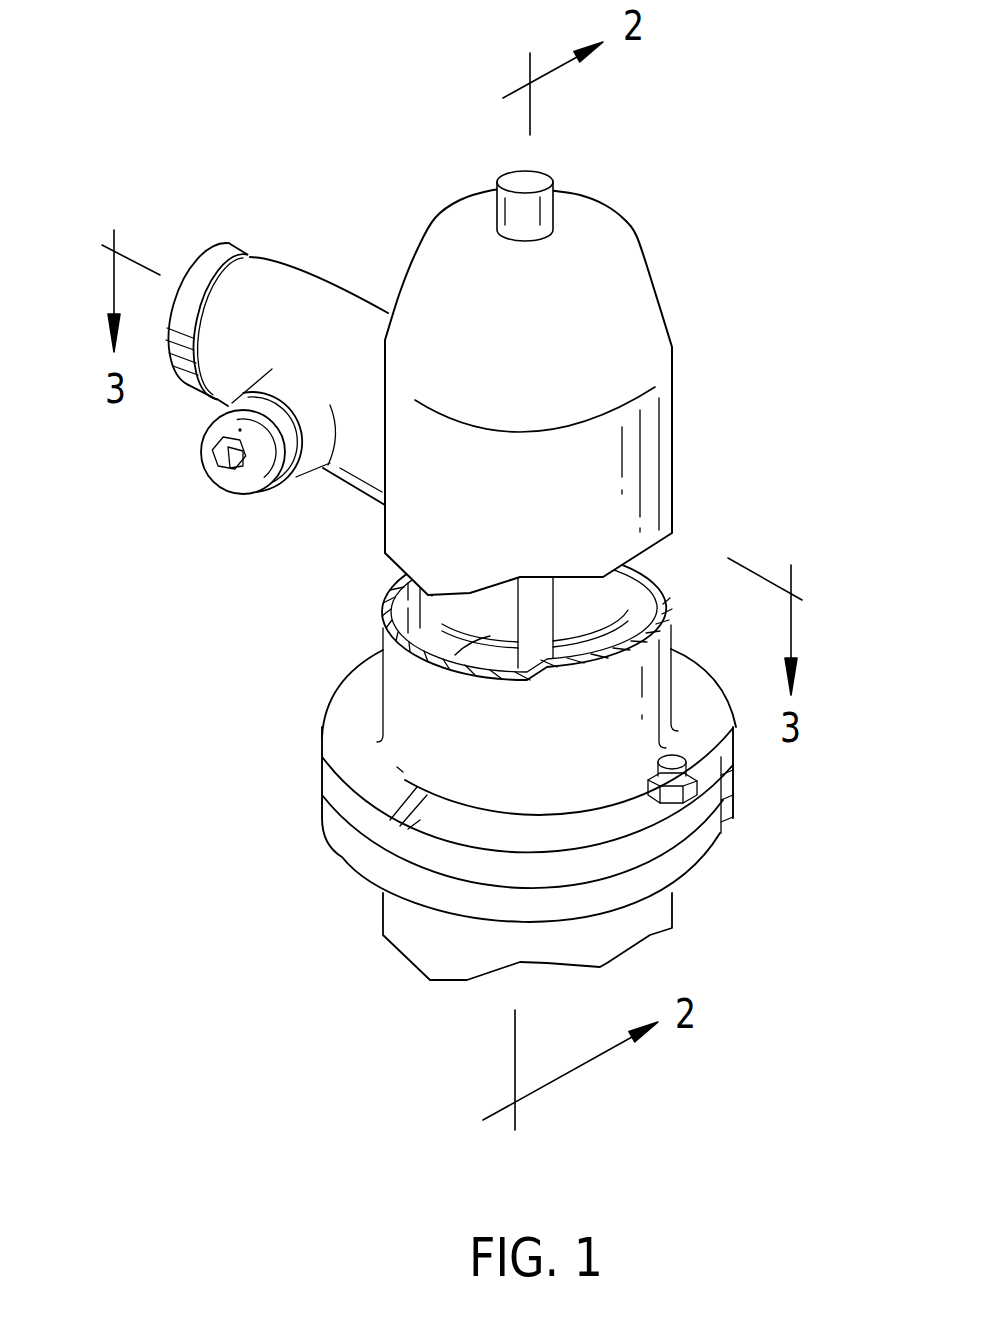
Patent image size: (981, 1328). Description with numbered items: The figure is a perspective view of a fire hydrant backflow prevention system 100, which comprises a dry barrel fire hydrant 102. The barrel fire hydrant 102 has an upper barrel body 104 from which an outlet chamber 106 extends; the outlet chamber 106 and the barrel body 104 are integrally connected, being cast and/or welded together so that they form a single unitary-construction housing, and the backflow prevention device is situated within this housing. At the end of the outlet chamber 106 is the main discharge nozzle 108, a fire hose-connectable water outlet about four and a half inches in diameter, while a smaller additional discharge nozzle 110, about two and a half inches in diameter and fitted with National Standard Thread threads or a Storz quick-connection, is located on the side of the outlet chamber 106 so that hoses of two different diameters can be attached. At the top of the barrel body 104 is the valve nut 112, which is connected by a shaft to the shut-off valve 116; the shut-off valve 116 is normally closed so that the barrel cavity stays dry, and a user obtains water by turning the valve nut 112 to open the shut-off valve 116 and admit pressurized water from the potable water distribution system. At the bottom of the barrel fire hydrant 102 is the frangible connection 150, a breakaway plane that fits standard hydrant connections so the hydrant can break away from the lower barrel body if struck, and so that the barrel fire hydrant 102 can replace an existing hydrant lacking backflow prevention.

The fire hydrant backflow prevention system 100 is at (190, 106).
The barrel fire hydrant 102 is at (402, 203).
The barrel body 104 is at (673, 483).
The outlet chamber 106 is at (328, 276).
The discharge nozzle 108 is at (188, 276).
The additional discharge nozzle 110 is at (302, 478).
The valve nut 112 is at (552, 172).
The shut-off valve 116 is at (506, 640).
The frangible connection 150 is at (322, 845).